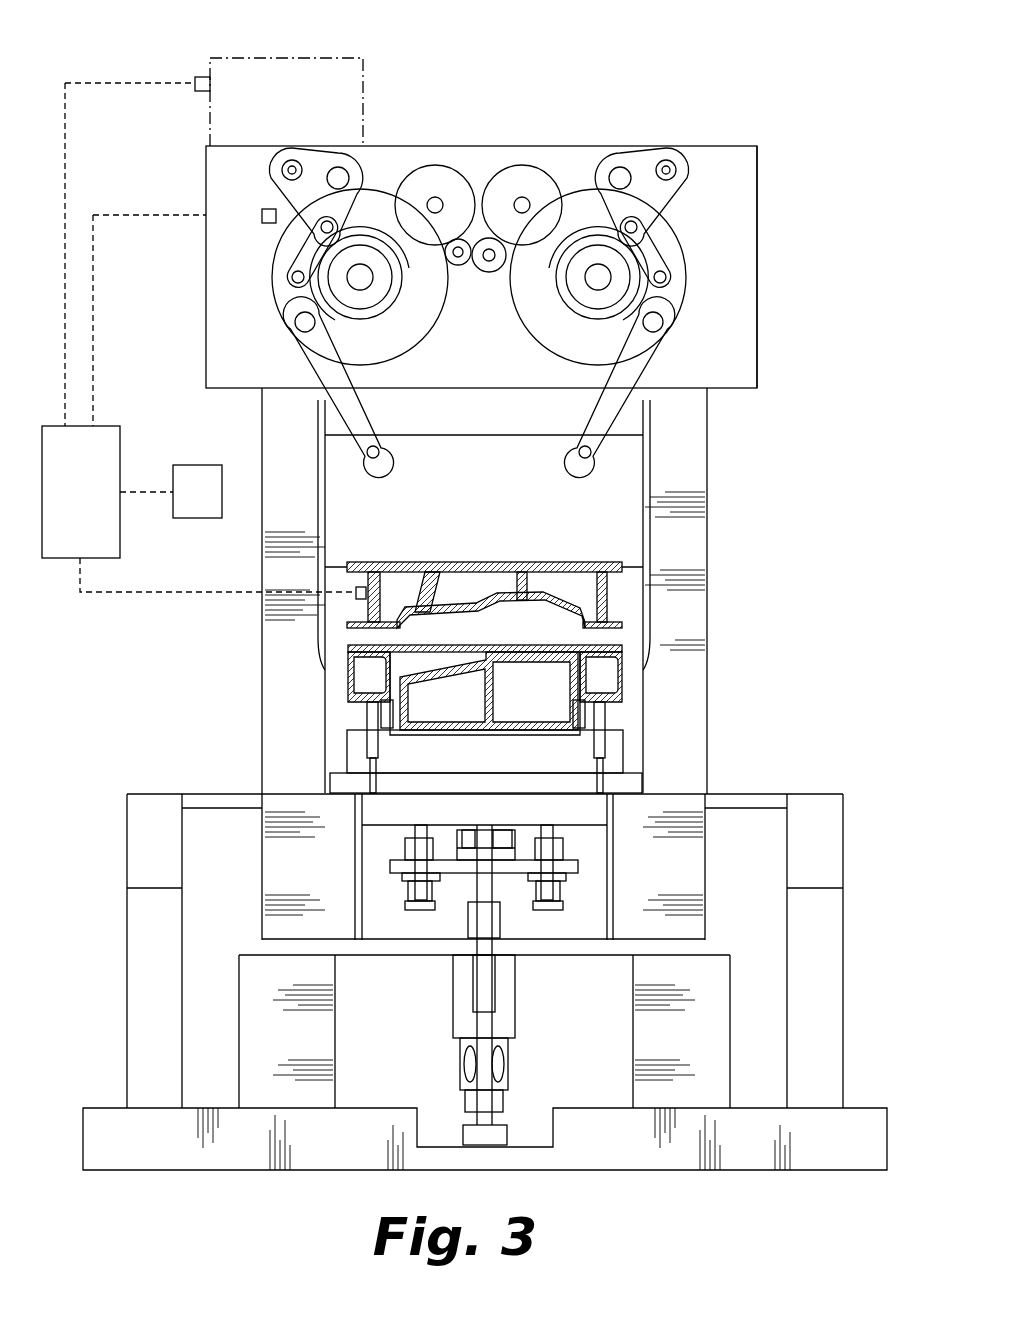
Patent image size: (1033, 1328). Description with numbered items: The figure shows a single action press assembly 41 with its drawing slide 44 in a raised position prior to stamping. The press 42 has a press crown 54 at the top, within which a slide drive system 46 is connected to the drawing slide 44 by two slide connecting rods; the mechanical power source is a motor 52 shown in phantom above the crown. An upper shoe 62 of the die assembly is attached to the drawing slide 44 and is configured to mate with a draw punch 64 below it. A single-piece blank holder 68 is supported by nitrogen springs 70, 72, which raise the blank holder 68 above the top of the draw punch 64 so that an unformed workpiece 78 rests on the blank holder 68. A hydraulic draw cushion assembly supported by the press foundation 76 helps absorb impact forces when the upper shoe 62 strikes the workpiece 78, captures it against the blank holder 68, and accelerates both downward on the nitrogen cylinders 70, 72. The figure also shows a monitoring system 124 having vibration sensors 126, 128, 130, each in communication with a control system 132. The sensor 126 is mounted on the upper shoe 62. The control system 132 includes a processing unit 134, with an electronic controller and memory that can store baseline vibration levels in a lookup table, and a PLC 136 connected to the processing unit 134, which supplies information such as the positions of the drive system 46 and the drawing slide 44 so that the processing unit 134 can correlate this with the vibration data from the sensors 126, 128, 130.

The press assembly 41 is at (650, 96).
The press 42 is at (203, 307).
The drawing slide 44 is at (458, 435).
The slide drive system 46 is at (705, 156).
The motor 52 is at (363, 85).
The press crown 54 is at (757, 340).
The upper shoe 62 is at (556, 603).
The draw punch 64 is at (490, 697).
The blank holder 68 is at (557, 707).
The nitrogen spring 70 is at (612, 713).
The nitrogen spring 72 is at (366, 718).
The press foundation 76 is at (843, 950).
The unformed workpiece 78 is at (603, 645).
The system 124 is at (69, 634).
The vibration sensor 126 is at (352, 593).
The vibration sensor 128 is at (262, 216).
The vibration sensor 130 is at (202, 77).
The control system 132 is at (158, 430).
The processing unit 134 is at (120, 548).
The PLC 136 is at (197, 518).